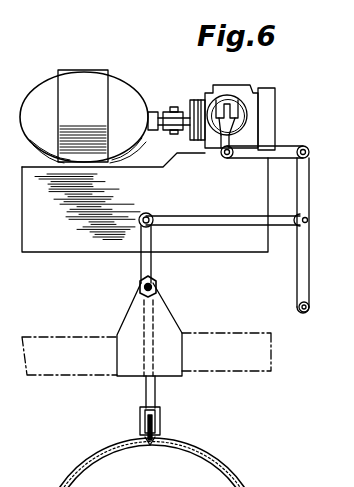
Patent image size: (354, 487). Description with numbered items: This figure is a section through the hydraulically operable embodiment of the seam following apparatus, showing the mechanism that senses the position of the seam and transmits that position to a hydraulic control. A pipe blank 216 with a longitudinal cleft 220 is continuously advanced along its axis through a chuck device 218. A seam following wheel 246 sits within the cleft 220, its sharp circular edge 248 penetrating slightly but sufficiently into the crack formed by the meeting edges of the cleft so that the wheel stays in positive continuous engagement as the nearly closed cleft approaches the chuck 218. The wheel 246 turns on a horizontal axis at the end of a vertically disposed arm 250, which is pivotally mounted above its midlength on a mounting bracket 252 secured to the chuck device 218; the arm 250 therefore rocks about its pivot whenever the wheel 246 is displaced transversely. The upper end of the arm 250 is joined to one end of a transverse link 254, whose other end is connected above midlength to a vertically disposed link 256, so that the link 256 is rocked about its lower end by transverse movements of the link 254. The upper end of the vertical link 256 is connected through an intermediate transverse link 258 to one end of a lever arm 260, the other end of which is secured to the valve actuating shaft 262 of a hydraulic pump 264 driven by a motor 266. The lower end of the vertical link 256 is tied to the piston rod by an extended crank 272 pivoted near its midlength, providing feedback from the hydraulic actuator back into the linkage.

The pipe blank 216 is at (233, 462).
The chuck device 218 is at (250, 364).
The longitudinal cleft 220 is at (145, 444).
The seam following wheel 246 is at (160, 424).
The sharp circular edge 248 is at (153, 448).
The arm 250 is at (157, 393).
The mounting bracket 252 is at (165, 318).
The transverse link 254 is at (199, 203).
The vertically disposed link 256 is at (297, 267).
The intermediate transverse link 258 is at (283, 147).
The lever arm 260 is at (232, 138).
The valve actuating shaft 262 is at (234, 116).
The hydraulic pump 264 is at (227, 81).
The motor 266 is at (88, 72).
The extended crank 272 is at (299, 307).